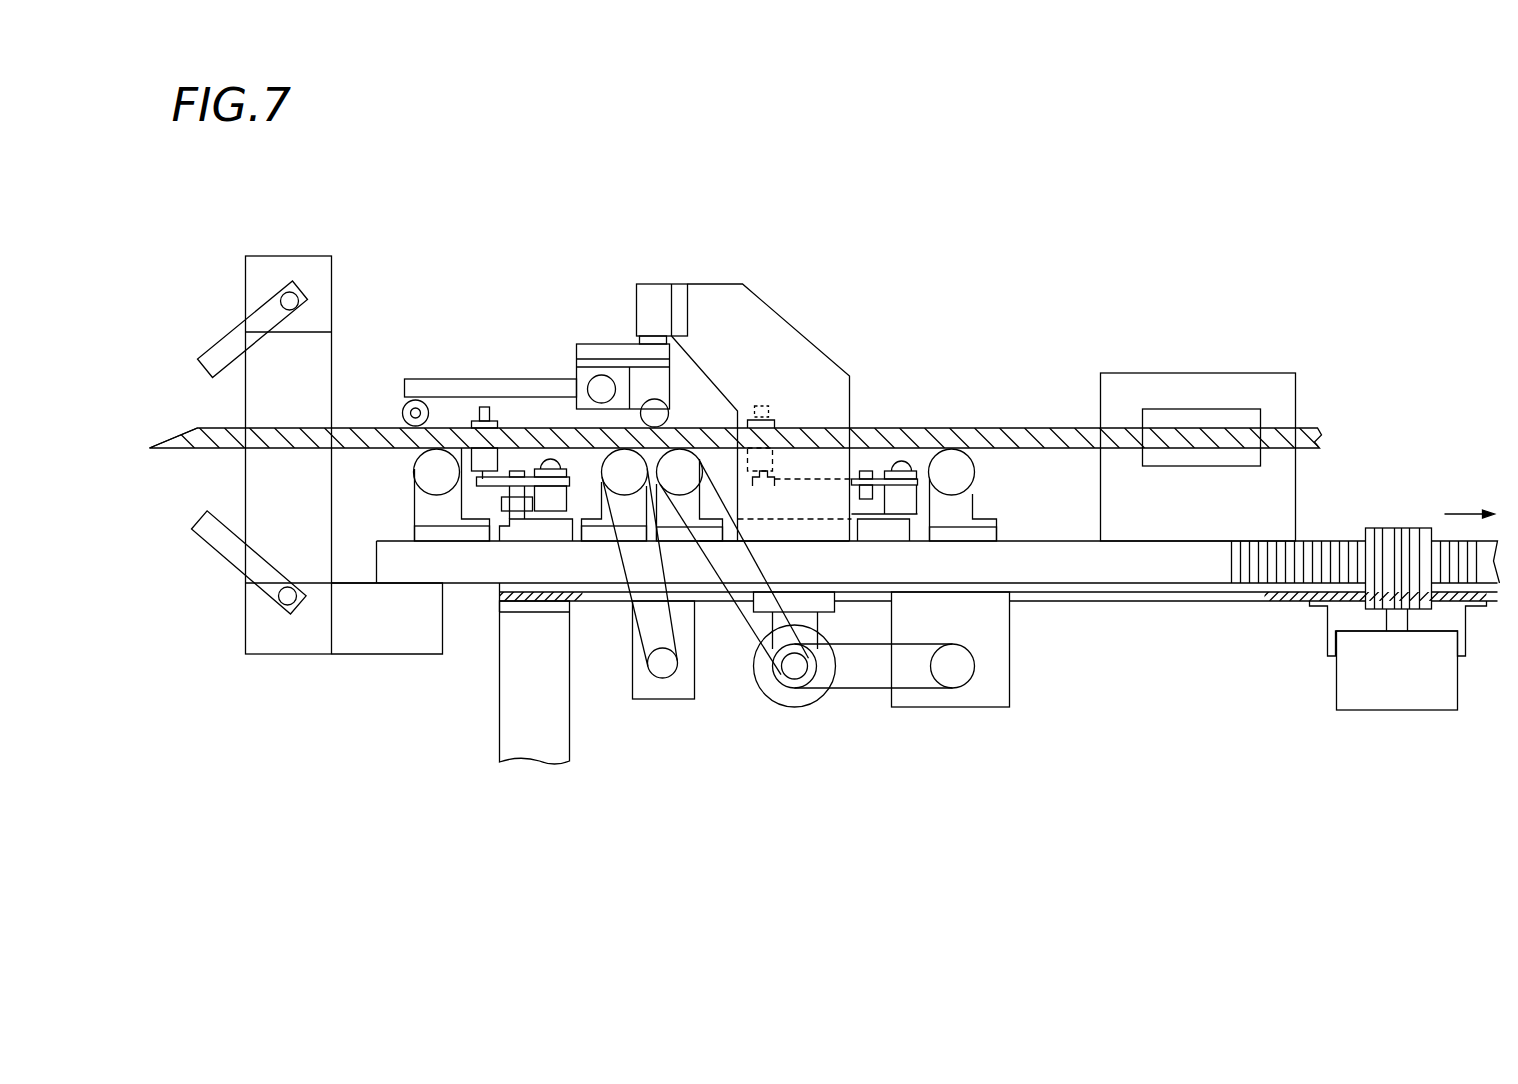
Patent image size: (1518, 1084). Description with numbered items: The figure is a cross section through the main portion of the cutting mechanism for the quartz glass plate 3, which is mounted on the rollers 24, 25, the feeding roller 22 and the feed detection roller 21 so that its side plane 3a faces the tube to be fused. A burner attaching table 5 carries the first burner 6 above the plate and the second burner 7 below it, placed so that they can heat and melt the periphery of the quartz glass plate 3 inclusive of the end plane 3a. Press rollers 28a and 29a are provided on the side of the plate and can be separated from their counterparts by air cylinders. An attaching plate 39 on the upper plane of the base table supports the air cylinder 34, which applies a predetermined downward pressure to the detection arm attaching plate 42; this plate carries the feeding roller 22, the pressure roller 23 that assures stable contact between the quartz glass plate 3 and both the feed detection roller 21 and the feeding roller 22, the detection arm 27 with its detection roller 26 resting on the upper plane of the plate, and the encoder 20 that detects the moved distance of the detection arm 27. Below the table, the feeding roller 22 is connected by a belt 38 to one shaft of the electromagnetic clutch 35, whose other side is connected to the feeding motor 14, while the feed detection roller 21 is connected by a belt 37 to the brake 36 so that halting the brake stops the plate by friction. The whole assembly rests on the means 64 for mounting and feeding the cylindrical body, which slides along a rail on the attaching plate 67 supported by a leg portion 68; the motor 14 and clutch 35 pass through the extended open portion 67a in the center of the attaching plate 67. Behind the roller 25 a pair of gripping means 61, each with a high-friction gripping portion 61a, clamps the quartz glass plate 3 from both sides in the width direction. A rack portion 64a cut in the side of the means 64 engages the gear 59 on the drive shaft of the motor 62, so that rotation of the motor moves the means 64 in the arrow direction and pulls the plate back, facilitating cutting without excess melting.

The quartz glass plate 3 is at (967, 428).
The side plane 3a is at (150, 449).
The burner attaching table 5 is at (318, 655).
The first burner 6 is at (227, 355).
The second burner 7 is at (223, 545).
The feeding motor 14 is at (985, 695).
The encoder 20 is at (577, 352).
The feed detection roller 21 is at (608, 463).
The feeding roller 22 is at (687, 452).
The pressure roller 23 is at (655, 400).
The roller 24 is at (423, 470).
The roller 25 is at (970, 465).
The detection roller 26 is at (400, 417).
The detection arm 27 is at (418, 385).
The press roller 28a is at (485, 473).
The press roller 29a is at (772, 415).
The air cylinder 34 is at (653, 290).
The electromagnetic clutch 35 is at (818, 700).
The brake 36 is at (657, 695).
The belt 37 is at (650, 655).
The belt 38 is at (758, 556).
The attaching plate 39 is at (722, 292).
The detection arm attaching plate 42 is at (592, 350).
The gear 59 is at (1395, 530).
The gripping means 61 is at (1240, 388).
The gripping portion 61a is at (1170, 405).
The motor 62 is at (1405, 690).
The means for mounting and feeding the cylindrical body 64 is at (472, 573).
The rack portion 64a is at (1320, 550).
The attaching plate 67 is at (578, 604).
The extended open portion 67a is at (1170, 595).
The leg portion 68 is at (500, 733).